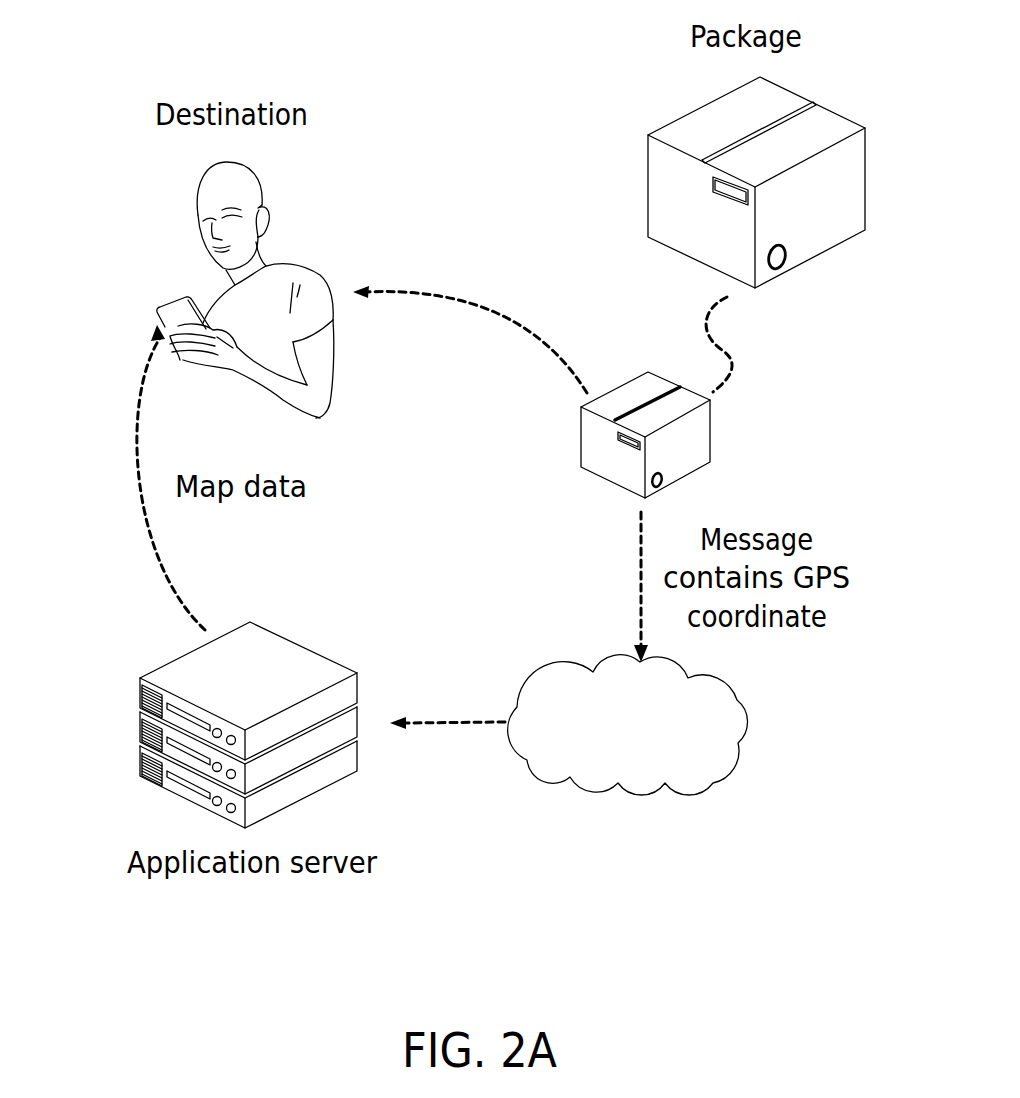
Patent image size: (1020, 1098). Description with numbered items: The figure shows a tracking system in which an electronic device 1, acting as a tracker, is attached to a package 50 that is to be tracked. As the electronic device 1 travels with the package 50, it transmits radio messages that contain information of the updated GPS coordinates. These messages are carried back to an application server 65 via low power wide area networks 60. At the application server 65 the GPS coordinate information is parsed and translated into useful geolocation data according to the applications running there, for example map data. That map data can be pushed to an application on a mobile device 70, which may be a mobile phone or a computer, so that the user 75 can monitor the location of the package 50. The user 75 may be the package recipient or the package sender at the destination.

The electronic device 1 is at (787, 256).
The package 50 is at (670, 123).
The low power wide area networks 60 is at (570, 660).
The application server 65 is at (288, 636).
The mobile device 70 is at (170, 310).
The user 75 is at (198, 207).